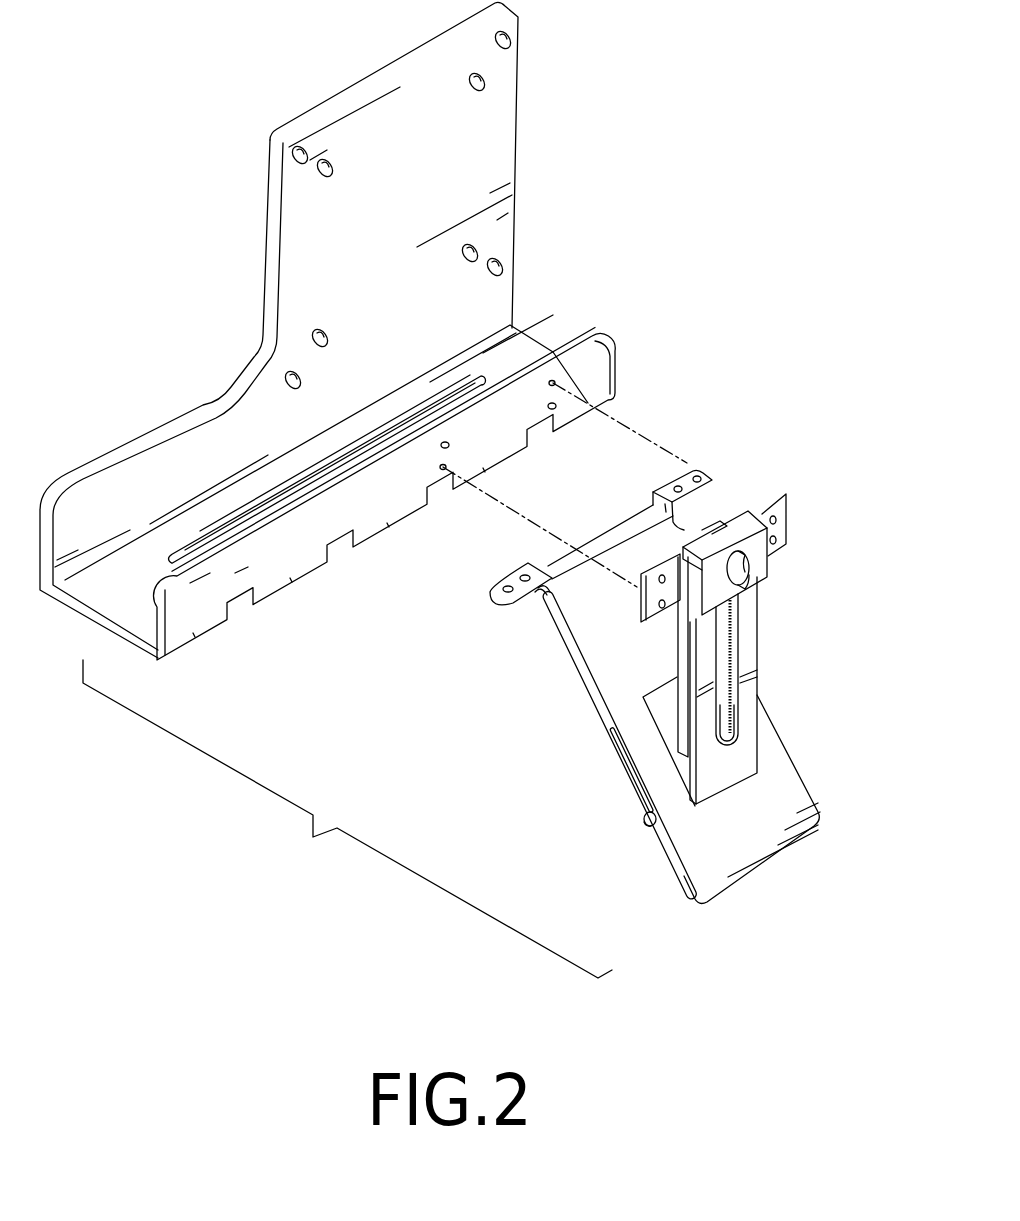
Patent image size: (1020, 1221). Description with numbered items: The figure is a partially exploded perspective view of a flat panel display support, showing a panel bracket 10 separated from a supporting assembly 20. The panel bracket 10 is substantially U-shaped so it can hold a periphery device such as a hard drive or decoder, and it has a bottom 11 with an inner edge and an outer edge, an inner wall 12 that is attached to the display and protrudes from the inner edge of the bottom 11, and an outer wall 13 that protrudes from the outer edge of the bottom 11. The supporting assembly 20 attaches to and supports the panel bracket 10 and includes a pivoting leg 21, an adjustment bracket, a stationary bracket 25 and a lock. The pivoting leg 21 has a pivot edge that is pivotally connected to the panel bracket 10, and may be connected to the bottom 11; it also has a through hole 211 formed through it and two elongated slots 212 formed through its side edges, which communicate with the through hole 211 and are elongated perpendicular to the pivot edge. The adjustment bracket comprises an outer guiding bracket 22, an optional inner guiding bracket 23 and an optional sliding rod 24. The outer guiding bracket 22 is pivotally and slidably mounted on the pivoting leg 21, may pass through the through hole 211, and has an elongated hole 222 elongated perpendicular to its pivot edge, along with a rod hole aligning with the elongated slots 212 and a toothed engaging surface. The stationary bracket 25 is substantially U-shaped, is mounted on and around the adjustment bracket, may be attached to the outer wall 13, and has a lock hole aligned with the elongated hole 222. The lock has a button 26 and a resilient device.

The panel bracket 10 is at (206, 302).
The bottom 11 is at (523, 333).
The inner wall 12 is at (493, 157).
The outer wall 13 is at (597, 366).
The supporting assembly 20 is at (517, 769).
The pivoting leg 21 is at (794, 812).
The through hole 211 is at (661, 710).
The elongated slots 212 is at (630, 773).
The outer guiding bracket 22 is at (753, 706).
The elongated hole 222 is at (735, 650).
The inner guiding bracket 23 is at (688, 662).
The sliding rod 24 is at (646, 823).
The stationary bracket 25 is at (762, 569).
The button 26 is at (746, 588).